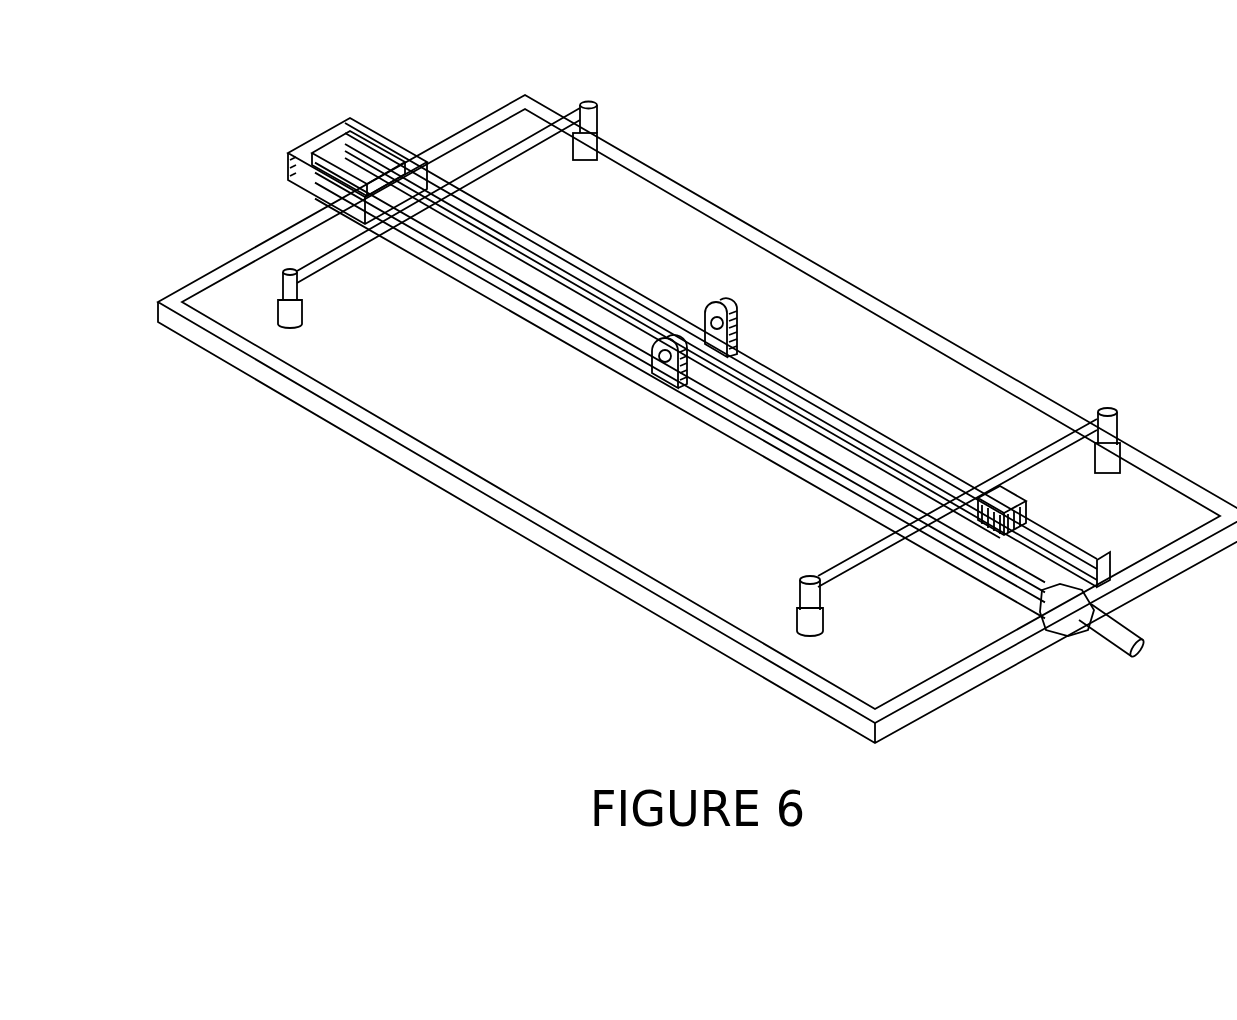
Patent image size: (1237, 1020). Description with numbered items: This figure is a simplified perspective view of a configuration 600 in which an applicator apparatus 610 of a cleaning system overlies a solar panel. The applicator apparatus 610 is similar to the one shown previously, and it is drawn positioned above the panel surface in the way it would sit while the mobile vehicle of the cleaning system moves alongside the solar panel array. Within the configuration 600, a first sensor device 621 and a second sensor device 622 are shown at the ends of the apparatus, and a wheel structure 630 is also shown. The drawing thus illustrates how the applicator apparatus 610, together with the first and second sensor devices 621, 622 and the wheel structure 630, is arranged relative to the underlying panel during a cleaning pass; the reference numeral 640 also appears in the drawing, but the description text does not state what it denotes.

The rail assembly 600 is at (848, 72).
The mounting brackets 610 is at (414, 172).
The front support posts 621 is at (301, 322).
The rear support posts 622 is at (584, 160).
The drive shaft 630 is at (1006, 603).
The base plate 640 is at (437, 486).